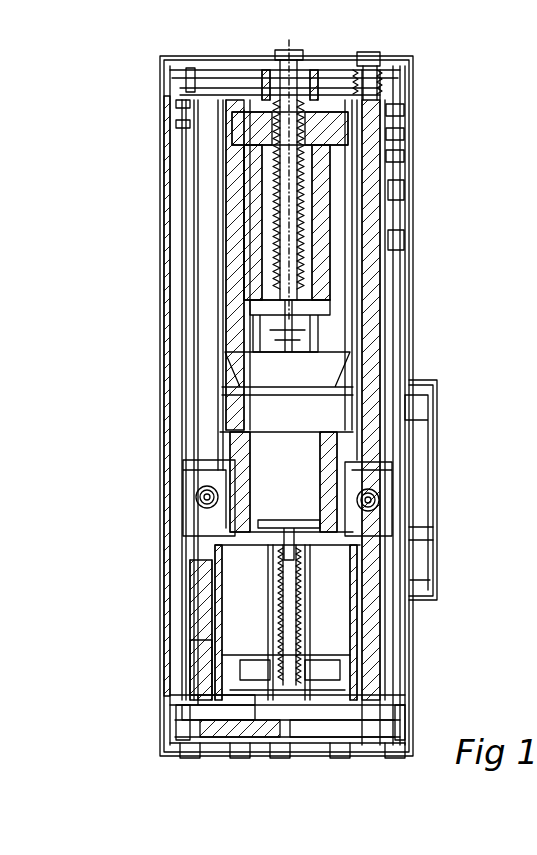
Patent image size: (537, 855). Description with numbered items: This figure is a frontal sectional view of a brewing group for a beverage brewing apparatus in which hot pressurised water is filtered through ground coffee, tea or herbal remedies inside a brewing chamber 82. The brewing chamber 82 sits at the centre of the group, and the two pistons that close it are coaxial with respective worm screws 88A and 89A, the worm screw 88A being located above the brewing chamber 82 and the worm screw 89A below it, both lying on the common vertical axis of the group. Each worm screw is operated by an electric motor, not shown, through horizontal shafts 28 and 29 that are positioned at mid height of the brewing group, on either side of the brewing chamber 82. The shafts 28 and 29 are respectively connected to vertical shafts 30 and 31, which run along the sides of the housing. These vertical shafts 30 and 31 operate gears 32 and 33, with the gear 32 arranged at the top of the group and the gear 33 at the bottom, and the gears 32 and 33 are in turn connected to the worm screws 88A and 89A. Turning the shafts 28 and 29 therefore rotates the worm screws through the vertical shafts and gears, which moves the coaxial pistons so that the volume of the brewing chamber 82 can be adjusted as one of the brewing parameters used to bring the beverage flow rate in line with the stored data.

The shaft 28 is at (380, 504).
The shaft 29 is at (196, 496).
The vertical shaft 30 is at (413, 273).
The vertical shaft 31 is at (215, 578).
The gear 32 is at (398, 70).
The gear 33 is at (235, 738).
The brewing chamber 82 is at (300, 440).
The worm screw 88A is at (330, 220).
The worm screw 89A is at (305, 614).